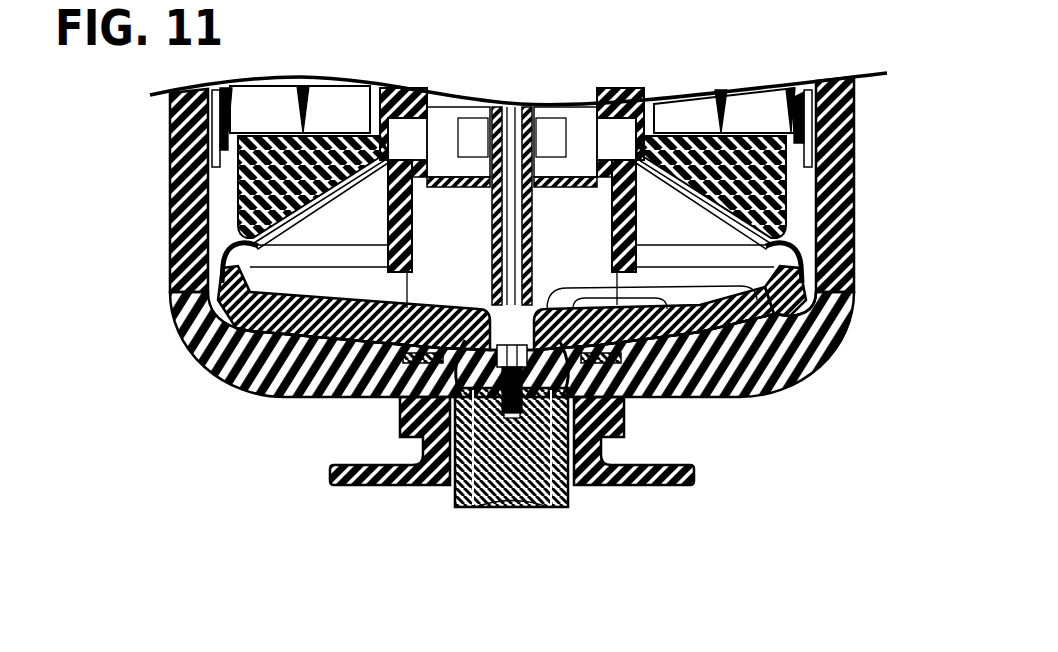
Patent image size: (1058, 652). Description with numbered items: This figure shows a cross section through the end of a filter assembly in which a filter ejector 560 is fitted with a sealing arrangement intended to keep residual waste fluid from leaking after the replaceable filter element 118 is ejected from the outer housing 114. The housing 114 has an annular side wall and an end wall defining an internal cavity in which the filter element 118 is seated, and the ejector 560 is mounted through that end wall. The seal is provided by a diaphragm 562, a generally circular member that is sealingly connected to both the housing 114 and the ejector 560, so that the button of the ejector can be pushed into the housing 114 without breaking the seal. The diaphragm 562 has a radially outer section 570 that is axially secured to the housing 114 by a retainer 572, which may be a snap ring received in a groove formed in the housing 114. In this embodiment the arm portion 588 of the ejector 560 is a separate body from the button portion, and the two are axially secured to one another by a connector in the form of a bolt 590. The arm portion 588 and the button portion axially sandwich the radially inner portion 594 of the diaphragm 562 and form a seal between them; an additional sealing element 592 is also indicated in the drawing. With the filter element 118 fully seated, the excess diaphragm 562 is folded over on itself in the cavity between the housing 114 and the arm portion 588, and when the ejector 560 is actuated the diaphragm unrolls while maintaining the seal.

The outer housing 114 is at (838, 103).
The replaceable filter element 118 is at (803, 178).
The filter ejector 560 is at (585, 520).
The diaphragm 562 is at (698, 343).
The radially outer section 570 is at (368, 397).
The retainer 572 is at (432, 308).
The arm portion 588 is at (793, 373).
The bolt 590 is at (512, 335).
The gasket 592 is at (790, 305).
The radially inner portion 594 is at (475, 507).